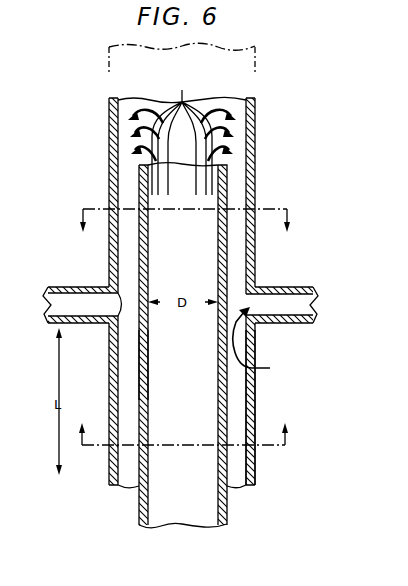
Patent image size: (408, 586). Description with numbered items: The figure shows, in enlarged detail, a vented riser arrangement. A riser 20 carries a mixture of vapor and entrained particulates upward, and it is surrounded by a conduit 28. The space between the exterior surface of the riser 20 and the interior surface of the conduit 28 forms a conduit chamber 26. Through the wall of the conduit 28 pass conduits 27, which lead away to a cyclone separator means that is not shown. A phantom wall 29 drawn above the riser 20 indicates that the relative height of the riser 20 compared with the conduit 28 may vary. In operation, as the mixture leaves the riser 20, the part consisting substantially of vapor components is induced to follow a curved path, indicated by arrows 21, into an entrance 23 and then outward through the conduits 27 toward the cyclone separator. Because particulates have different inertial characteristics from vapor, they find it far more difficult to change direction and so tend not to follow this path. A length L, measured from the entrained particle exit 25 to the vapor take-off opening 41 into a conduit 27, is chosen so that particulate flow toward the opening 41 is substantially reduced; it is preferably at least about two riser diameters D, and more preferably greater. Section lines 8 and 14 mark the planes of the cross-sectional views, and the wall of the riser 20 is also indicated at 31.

The section line 8- 8 is at (185, 208).
The section line 14- 14 is at (185, 448).
The inner tube 20 is at (152, 358).
The flow reversal point at top of inner tube 21 is at (182, 135).
The reversed flow into annular passage 23 is at (242, 188).
The lower annular passage 25 is at (233, 480).
The annular passage between tubes 26 is at (238, 258).
The side outlet pipes 27 is at (73, 285).
The outer tube wall 28 is at (255, 387).
The upper housing portion 29 is at (256, 73).
The inner tube wall 31 is at (146, 343).
The flow arrow into side pipe 41 is at (261, 341).